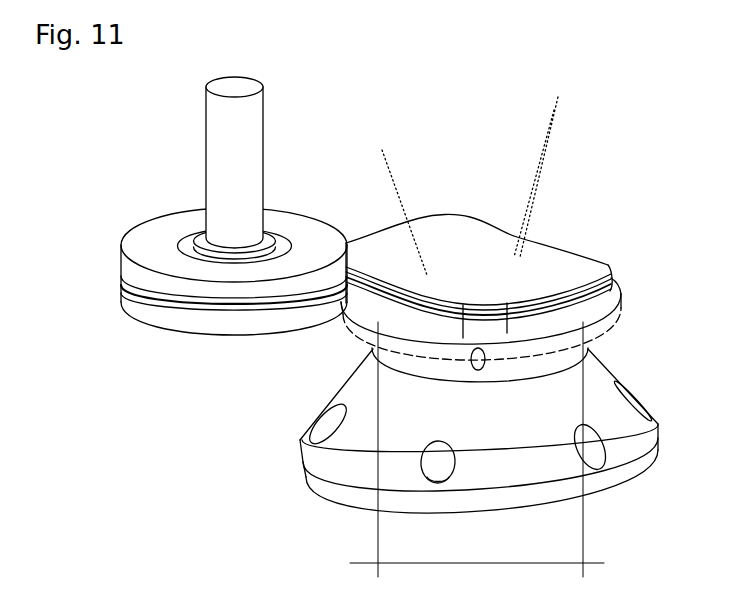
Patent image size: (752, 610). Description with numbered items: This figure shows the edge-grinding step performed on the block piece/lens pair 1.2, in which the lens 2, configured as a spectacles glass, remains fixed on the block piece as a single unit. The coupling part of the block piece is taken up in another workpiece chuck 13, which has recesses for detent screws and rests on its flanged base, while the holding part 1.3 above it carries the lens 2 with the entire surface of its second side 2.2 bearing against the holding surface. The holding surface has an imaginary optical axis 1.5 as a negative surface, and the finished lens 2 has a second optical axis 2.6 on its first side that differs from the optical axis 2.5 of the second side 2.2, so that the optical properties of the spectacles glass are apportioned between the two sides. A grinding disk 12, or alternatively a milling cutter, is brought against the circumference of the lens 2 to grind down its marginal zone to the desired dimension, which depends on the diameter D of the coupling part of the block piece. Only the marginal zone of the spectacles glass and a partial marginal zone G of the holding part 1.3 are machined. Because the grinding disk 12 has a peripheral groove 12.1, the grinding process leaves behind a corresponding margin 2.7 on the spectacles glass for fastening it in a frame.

The grinding disk 12 is at (307, 225).
The peripheral groove 12.1 is at (128, 298).
The block piece/lens pair 1.2 is at (620, 253).
The holding part 1.3 is at (364, 335).
The lens 2 is at (513, 278).
The second side 2.2 is at (553, 232).
The optical axis 2.5 is at (547, 150).
The second optical axis 2.6 is at (390, 168).
The margin 2.7 is at (570, 303).
The imaginary optical axis 1.5 is at (552, 115).
The partial marginal zone of the holding part G is at (352, 298).
The workpiece chuck 13 is at (355, 457).
The diameter D is at (528, 562).